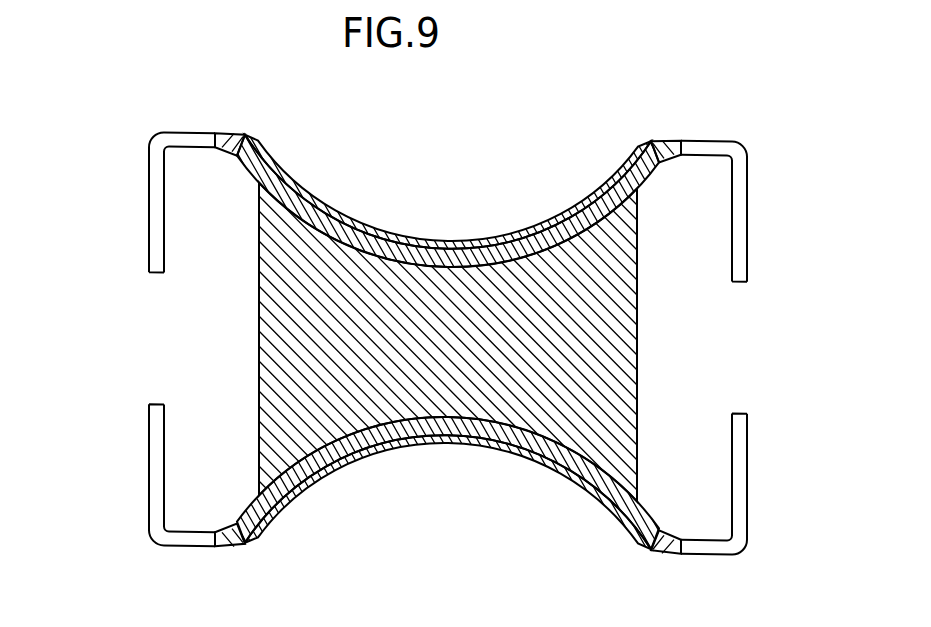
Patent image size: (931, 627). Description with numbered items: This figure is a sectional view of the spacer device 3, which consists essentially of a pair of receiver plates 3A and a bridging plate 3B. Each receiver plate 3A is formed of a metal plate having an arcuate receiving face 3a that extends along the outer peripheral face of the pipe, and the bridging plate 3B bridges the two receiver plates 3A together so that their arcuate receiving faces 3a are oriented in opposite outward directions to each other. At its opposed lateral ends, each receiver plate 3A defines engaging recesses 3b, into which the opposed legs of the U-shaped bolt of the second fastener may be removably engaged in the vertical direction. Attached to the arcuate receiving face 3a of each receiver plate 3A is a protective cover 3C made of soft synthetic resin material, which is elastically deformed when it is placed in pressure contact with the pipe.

The spacer device 3 is at (421, 341).
The bridging plate 3B is at (624, 344).
The arcuate receiving face 3a is at (417, 243).
The protective cover 3C is at (365, 221).
The receiver plate 3A is at (668, 138).
The engaging recess 3b is at (148, 220).